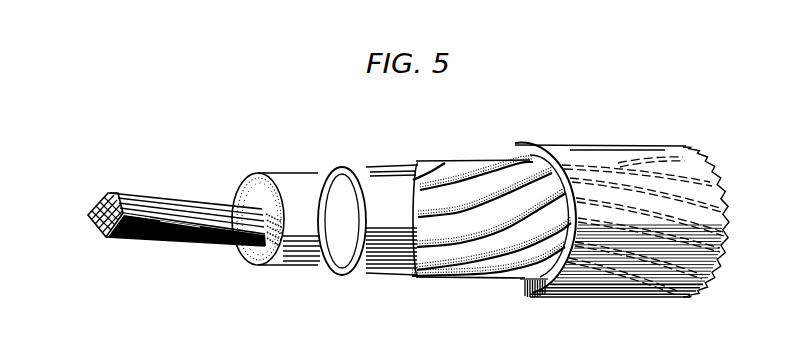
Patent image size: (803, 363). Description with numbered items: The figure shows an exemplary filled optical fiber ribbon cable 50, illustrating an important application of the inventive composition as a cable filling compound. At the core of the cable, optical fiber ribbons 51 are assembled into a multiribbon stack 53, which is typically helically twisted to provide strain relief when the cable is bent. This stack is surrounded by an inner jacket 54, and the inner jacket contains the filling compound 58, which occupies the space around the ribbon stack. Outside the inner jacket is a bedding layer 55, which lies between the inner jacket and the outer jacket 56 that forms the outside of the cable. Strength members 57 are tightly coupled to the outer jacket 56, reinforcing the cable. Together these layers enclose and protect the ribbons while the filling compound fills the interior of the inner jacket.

The filled optical fiber ribbon cable 50 is at (610, 285).
The optical fiber ribbons 51 is at (92, 207).
The multiribbon stack 53 is at (218, 207).
The inner jacket 54 is at (322, 167).
The bedding layer 55 is at (383, 163).
The outer jacket 56 is at (516, 288).
The strength members 57 is at (533, 161).
The filling compound 58 is at (250, 190).